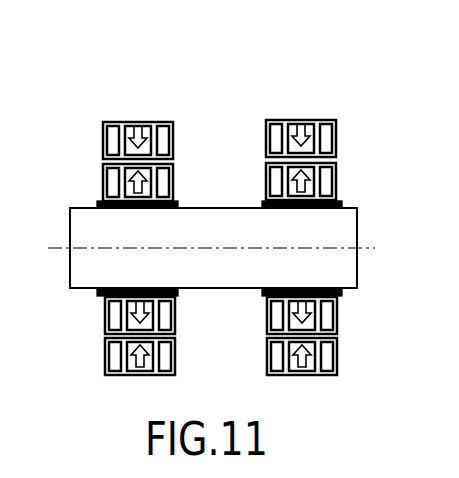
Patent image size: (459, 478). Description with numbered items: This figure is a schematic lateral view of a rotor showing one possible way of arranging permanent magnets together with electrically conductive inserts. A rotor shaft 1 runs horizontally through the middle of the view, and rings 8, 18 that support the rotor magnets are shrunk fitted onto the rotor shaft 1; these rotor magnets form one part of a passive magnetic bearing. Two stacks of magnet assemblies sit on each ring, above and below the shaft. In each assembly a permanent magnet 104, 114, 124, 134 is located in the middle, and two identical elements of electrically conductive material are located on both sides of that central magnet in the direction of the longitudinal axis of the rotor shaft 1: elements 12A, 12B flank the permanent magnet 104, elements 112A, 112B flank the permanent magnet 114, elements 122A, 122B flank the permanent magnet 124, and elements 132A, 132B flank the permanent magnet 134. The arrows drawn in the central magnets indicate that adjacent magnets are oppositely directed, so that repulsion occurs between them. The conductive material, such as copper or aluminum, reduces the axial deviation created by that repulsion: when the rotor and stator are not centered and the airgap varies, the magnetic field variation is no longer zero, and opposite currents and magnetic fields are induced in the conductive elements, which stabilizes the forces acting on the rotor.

The rotor shaft 1 is at (215, 278).
The first ring 8 is at (348, 202).
The second ring 18 is at (105, 200).
The element of electrically conductive material 12A is at (273, 187).
The element of electrically conductive material 12B is at (328, 180).
The permanent magnet 104 is at (292, 192).
The element of electrically conductive material 112A is at (112, 182).
The element of electrically conductive material 112B is at (165, 187).
The permanent magnet 114 is at (150, 192).
The element of electrically conductive material 122A is at (273, 142).
The element of electrically conductive material 122B is at (328, 137).
The permanent magnet 124 is at (300, 126).
The element of electrically conductive material 132A is at (112, 137).
The element of electrically conductive material 132B is at (164, 137).
The permanent magnet 134 is at (141, 128).